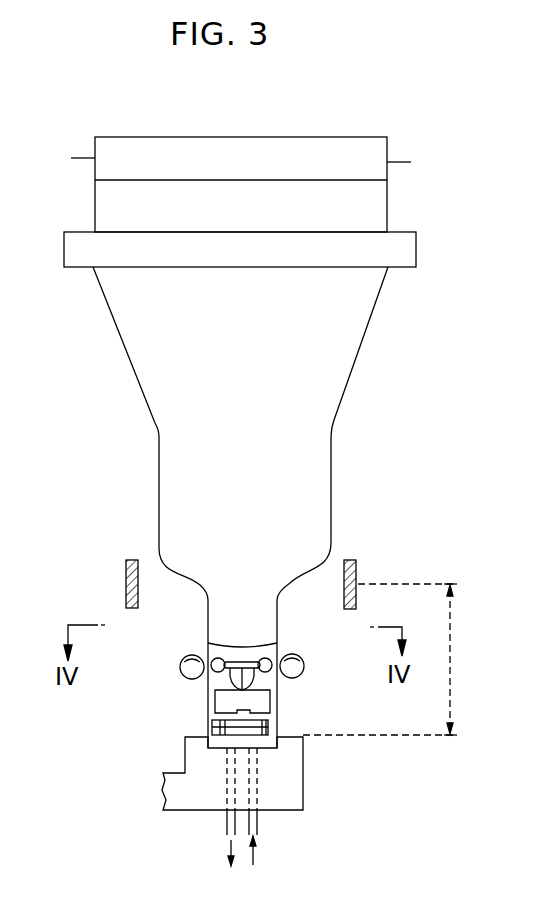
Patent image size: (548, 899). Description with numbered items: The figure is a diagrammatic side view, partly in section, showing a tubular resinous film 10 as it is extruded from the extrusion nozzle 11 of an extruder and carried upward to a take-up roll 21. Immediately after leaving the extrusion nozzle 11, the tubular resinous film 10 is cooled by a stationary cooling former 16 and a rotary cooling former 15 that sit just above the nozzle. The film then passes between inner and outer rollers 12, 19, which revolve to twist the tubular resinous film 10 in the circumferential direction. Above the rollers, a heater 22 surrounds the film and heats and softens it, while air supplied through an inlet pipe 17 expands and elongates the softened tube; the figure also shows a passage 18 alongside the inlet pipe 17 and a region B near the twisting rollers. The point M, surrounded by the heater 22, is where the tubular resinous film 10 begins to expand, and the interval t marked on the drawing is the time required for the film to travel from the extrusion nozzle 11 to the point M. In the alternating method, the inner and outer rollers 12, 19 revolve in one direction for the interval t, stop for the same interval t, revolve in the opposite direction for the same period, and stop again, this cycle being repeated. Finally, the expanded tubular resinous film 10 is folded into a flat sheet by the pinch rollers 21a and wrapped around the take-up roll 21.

The tubular resinous film 10 is at (334, 447).
The take-up roll 21 is at (297, 139).
The pinch rollers 21a is at (416, 252).
The heater 22 is at (357, 585).
The point M is at (296, 585).
The glass bead / drop B is at (279, 646).
The outer rollers 19 is at (181, 665).
The inner rollers 12 is at (212, 672).
The rotary cooling former 15 is at (270, 709).
The stationary cooling former 16 is at (215, 727).
The extrusion nozzle 11 is at (262, 749).
The inlet pipe 17 is at (258, 822).
The coolant outlet tube 18 is at (226, 822).
The interval t is at (380, 659).